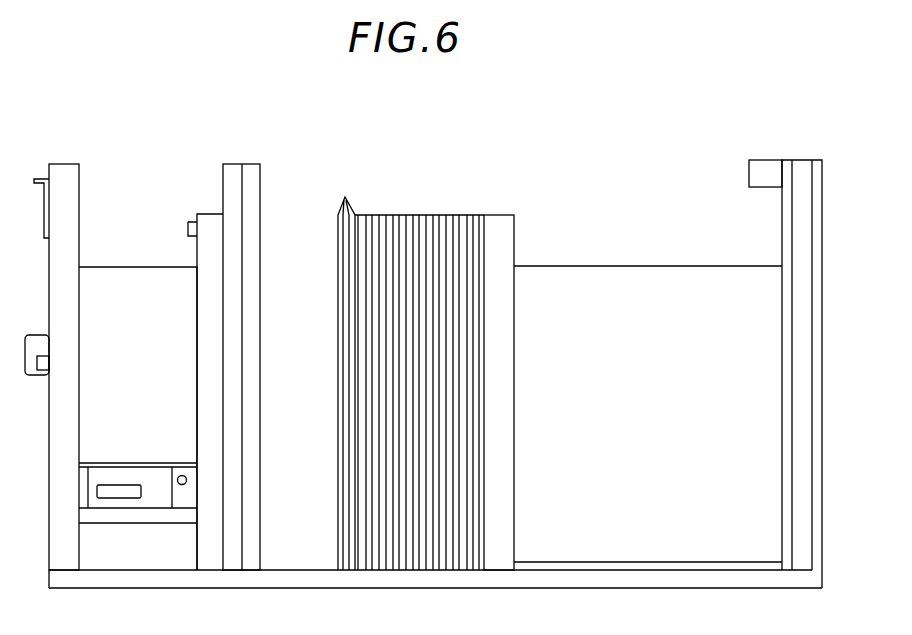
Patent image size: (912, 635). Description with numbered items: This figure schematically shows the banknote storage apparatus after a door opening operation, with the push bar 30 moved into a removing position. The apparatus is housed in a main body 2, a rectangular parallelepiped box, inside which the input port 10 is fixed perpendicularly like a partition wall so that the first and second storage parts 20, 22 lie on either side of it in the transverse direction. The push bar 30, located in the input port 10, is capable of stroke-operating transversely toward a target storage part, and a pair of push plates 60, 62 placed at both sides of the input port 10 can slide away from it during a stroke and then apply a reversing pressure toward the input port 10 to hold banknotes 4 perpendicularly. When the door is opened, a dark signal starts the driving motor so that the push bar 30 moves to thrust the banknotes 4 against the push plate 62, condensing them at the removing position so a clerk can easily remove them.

The main body 2 is at (800, 163).
The banknote 4 is at (413, 218).
The input port 10 is at (254, 185).
The first storage part 20 is at (121, 376).
The second storage part 22 is at (608, 421).
The push bar 30 is at (344, 195).
The push plate 60 is at (207, 252).
The push plate 62 is at (497, 220).